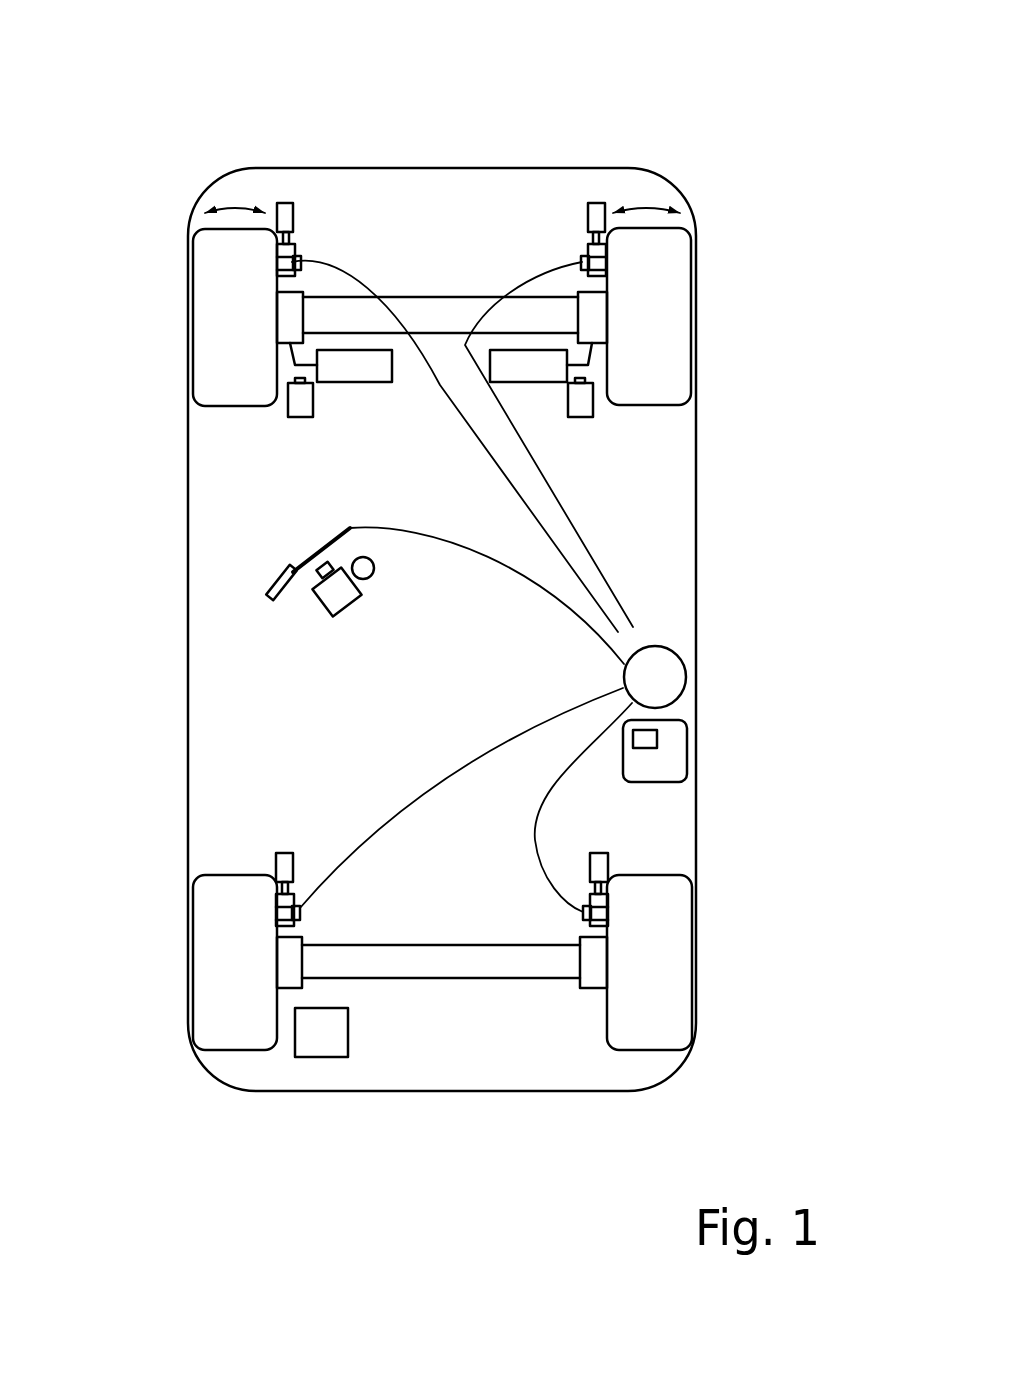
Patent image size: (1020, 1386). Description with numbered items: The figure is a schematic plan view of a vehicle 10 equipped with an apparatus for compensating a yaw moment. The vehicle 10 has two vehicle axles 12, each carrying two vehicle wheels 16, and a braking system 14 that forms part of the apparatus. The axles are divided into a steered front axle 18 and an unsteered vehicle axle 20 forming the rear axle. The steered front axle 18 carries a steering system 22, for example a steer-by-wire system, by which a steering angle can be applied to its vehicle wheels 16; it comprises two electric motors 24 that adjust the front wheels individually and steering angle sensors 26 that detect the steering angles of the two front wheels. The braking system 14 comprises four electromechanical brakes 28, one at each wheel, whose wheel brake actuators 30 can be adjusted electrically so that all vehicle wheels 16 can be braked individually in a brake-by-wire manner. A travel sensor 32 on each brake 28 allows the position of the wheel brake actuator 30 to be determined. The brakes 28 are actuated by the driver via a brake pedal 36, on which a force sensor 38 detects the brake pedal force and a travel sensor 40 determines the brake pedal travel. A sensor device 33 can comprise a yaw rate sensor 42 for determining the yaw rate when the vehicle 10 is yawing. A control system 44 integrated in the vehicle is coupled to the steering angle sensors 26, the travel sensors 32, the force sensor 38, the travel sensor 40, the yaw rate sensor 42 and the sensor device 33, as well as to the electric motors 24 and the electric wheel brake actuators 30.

The vehicle 10 is at (182, 112).
The vehicle axles 12 is at (428, 277).
The braking system 14 is at (677, 648).
The vehicle wheels 16 is at (236, 270).
The steered front axle 18 is at (448, 314).
The unsteered vehicle axle 20 is at (470, 965).
The steering system 22 is at (460, 486).
The electric motors 24 is at (360, 373).
The steering angle sensors 26 is at (300, 400).
The electromechanical brakes 28 is at (304, 236).
The wheel brake actuators 30 is at (291, 264).
The travel sensors 32 is at (286, 214).
The sensor device 33 is at (665, 762).
The brake pedal 36 is at (276, 603).
The force sensor 38 is at (342, 598).
The travel sensor 40 is at (368, 573).
The yaw rate sensor 42 is at (657, 737).
The control system 44 is at (320, 1025).